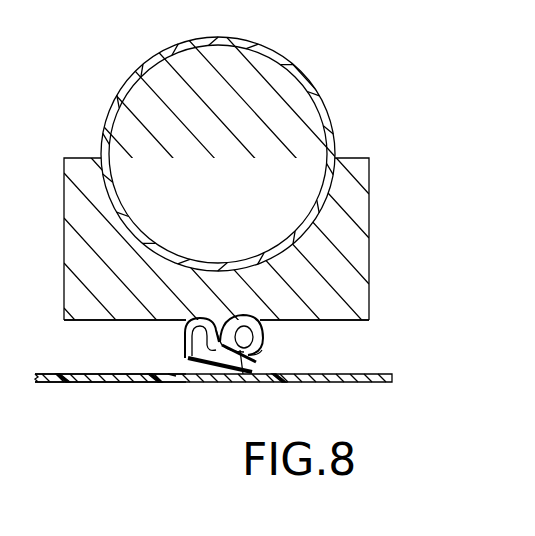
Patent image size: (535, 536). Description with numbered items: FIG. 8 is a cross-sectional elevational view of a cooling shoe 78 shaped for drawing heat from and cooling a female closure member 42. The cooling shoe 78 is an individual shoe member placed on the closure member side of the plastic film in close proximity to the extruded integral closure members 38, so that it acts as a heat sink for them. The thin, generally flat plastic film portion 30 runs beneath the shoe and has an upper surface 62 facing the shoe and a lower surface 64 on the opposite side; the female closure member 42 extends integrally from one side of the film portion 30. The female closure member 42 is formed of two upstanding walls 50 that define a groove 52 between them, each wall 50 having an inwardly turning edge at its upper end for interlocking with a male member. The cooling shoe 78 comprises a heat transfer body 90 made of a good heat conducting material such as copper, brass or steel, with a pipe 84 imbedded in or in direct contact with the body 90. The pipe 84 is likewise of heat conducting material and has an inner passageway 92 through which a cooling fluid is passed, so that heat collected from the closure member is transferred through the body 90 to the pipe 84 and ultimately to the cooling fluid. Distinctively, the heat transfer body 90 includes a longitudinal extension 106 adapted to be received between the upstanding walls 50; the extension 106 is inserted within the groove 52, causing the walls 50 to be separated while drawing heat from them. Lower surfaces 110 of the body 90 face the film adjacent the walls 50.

The plastic film portion 30 is at (122, 384).
The integral closure members 38 is at (268, 346).
The female closure member 42 is at (243, 358).
The upstanding walls 50 is at (186, 352).
The groove 52 is at (256, 356).
The upper surface 62 is at (84, 374).
The lower surface 64 is at (60, 384).
The cooling shoe 78 is at (337, 70).
The pipe 84 is at (247, 42).
The heat transfer body 90 is at (75, 207).
The inner passageway 92 is at (206, 187).
The longitudinal extension 106 is at (224, 322).
The block lower surfaces 110 is at (118, 321).